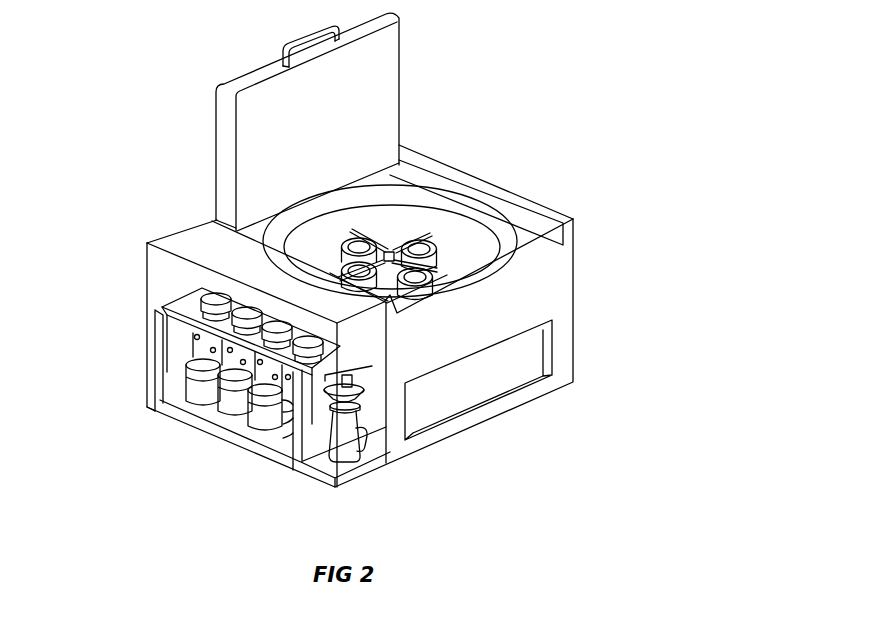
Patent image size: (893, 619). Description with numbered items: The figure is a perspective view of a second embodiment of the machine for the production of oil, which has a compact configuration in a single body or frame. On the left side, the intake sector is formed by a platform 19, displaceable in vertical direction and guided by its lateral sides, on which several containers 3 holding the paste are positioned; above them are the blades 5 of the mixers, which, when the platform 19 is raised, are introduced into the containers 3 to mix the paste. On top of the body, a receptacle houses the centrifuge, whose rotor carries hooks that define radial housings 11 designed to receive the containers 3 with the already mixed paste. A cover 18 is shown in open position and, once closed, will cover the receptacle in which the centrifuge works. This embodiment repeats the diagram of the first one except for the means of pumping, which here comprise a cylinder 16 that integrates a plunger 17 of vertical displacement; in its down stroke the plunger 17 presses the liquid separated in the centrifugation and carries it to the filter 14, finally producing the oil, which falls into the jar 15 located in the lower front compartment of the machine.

The containers 3 is at (258, 418).
The blades 5 is at (202, 344).
The radial housings 11 is at (396, 258).
The filter 14 is at (347, 404).
The jar 15 is at (348, 458).
The cylinder 16 is at (325, 381).
The plunger 17 is at (352, 373).
The cover 18 is at (350, 120).
The platform 19 is at (185, 409).